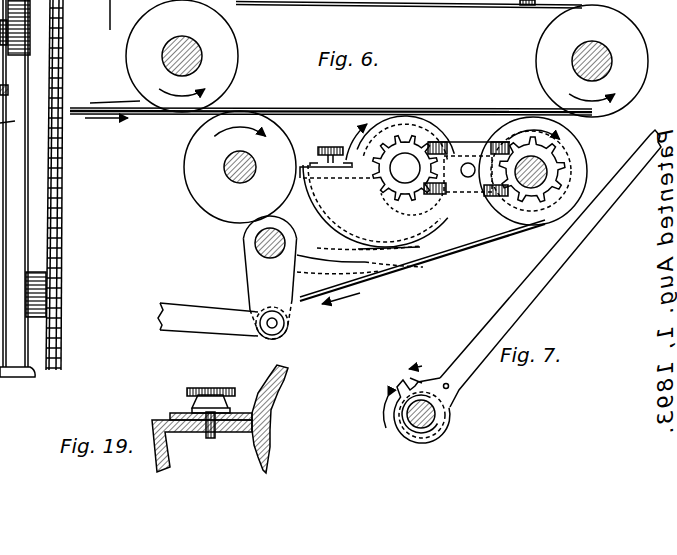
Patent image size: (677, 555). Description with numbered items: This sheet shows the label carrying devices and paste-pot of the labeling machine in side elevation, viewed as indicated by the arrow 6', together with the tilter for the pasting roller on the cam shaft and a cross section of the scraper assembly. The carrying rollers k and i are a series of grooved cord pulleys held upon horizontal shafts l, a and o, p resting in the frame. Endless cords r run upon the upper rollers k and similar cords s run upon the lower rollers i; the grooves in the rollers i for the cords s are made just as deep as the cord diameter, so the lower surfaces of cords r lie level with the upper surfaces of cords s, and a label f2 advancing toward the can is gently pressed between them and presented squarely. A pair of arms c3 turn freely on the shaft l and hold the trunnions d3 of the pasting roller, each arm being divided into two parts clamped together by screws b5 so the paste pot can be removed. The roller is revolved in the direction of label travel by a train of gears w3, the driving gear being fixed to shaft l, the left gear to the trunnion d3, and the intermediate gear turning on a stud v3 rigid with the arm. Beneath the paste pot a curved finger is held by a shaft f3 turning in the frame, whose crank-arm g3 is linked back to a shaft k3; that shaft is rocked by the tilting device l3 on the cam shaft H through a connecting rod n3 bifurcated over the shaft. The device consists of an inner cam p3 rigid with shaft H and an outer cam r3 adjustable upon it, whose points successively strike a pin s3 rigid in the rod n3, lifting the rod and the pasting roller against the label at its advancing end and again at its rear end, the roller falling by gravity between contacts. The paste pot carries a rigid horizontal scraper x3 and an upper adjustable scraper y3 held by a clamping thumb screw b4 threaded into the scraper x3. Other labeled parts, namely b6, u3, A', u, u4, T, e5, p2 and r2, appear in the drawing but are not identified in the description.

In FIG. 6, the carrying rollers k is at (387, 58).
In FIG. 6, the horizontal shaft p is at (200, 52).
In FIG. 6, the horizontal shaft o is at (611, 61).
In FIG. 6, the carrying rollers i is at (385, 168).
In FIG. 6, the horizontal shaft a is at (240, 183).
In FIG. 6, the shaft l is at (548, 171).
In FIG. 6, the endless cords r is at (313, 108).
In FIG. 6, the labels f2 is at (100, 104).
In FIG. 6, the bracket b6 is at (451, 4).
In FIG. 6, the bar u3 is at (505, 4).
In FIG. 6, the endless cords s is at (486, 243).
In FIG. 6, the casing A' is at (400, 122).
In FIG. 19, the casing A' is at (276, 419).
In FIG. 6, the trunnions of the pasting roller d3 is at (408, 175).
In FIG. 6, the arms c3 is at (433, 196).
In FIG. 6, the clamping screws b5 is at (470, 144).
In FIG. 6, the train of gears w3 is at (398, 192).
In FIG. 6, the stud v3 is at (475, 170).
In FIG. 6, the shaft u is at (455, 178).
In FIG. 6, the gear u4 is at (531, 171).
In FIG. 6, the frame plate T is at (374, 206).
In FIG. 19, the frame plate T is at (160, 467).
In FIG. 6, the clamping thumb screw b4 is at (331, 147).
In FIG. 19, the clamping thumb screw b4 is at (212, 390).
In FIG. 6, the adjustable scraper y3 is at (316, 160).
In FIG. 6, the guide plate e5 is at (360, 257).
In FIG. 6, the shaft f3 is at (256, 247).
In FIG. 6, the crank-arm g3 is at (269, 277).
In FIG. 19, the crank-arm g3 is at (182, 413).
In FIG. 6, the shaft k3 is at (221, 319).
In FIG. 6, the chain p2 is at (58, 200).
In FIG. 6, the standard r2 is at (62, 347).
In FIG. 6, the arrow 6' is at (105, 15).
In FIG. 7, the connecting rod n3 is at (532, 295).
In FIG. 7, the cam shaft H is at (405, 425).
In FIG. 7, the tilting device l3 is at (420, 434).
In FIG. 7, the cam p3 is at (414, 428).
In FIG. 7, the pin s3 is at (449, 388).
In FIG. 7, the cam r3 is at (419, 370).
In FIG. 19, the scraper x3 is at (184, 433).